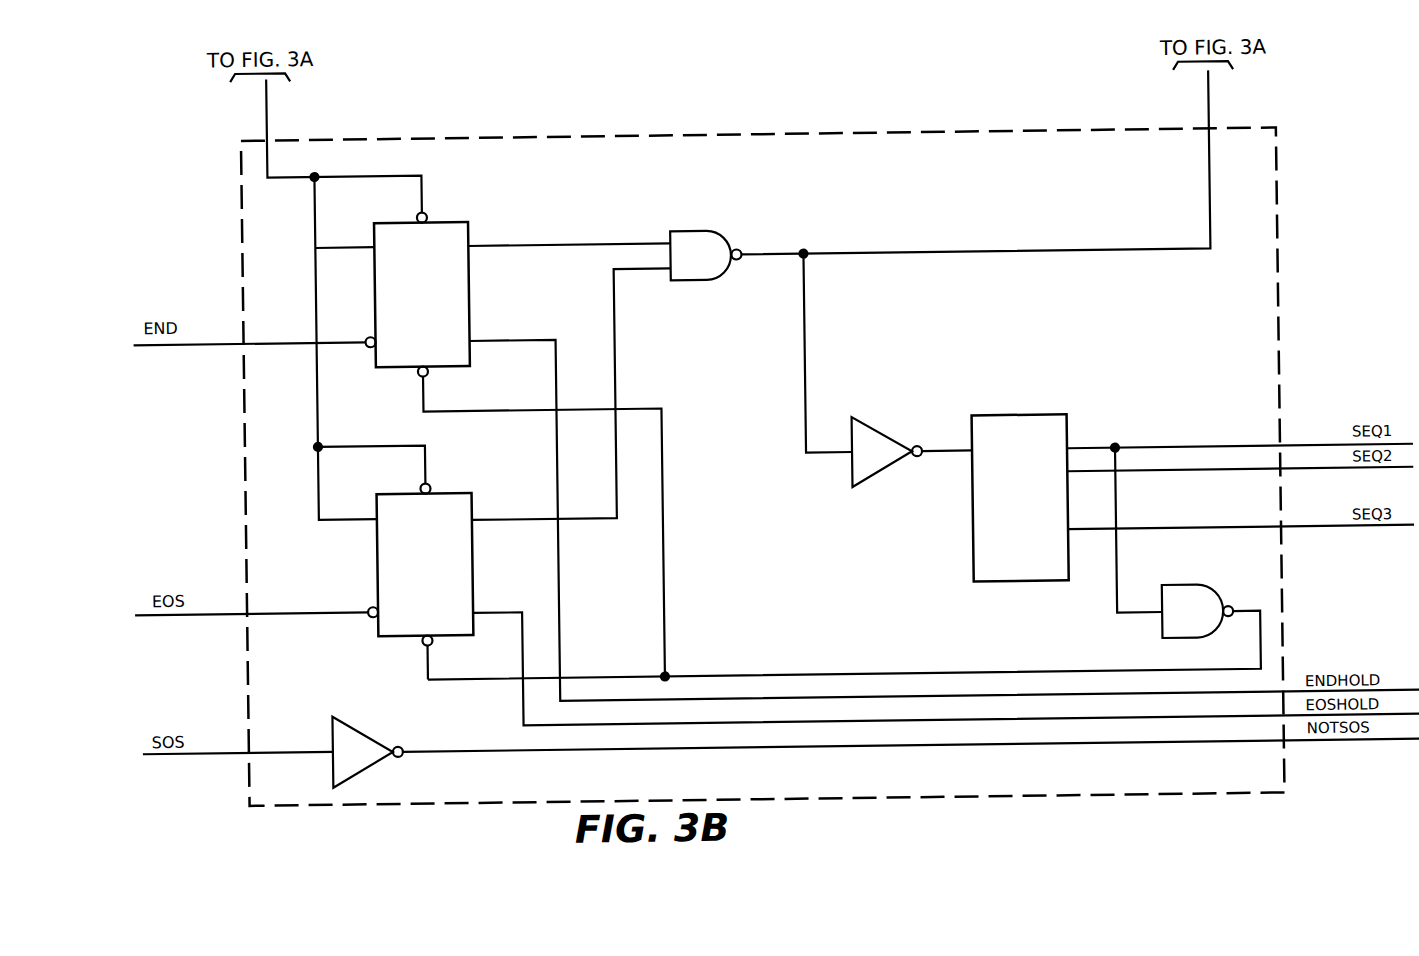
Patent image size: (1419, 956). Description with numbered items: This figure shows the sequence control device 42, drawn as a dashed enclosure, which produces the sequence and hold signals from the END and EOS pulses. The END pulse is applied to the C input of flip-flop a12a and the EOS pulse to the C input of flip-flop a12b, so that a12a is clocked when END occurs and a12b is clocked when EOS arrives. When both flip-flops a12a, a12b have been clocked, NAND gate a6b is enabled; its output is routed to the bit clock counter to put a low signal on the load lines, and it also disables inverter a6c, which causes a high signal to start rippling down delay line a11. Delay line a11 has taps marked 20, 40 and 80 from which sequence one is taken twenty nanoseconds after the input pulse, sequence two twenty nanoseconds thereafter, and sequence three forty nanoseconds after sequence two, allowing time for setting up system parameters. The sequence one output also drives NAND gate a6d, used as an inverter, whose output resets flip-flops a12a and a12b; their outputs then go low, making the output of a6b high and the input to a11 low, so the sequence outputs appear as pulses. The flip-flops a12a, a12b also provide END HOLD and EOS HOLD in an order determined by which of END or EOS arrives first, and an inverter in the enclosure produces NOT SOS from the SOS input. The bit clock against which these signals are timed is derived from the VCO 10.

The sequence control device 42 is at (1040, 801).
The VCO 10 is at (387, 470).
The 20 ns delay tap (SEQ1) 20 is at (1226, 450).
The 40 ns delay tap (SEQ2) 40 is at (1226, 471).
The 80 ns delay tap (SEQ3) 80 is at (1227, 529).
The flip-flop a12a is at (417, 294).
The flip-flop a12b is at (420, 569).
The NAND gate a6b is at (706, 255).
The inverter a6c is at (887, 451).
The NAND gate a6d is at (1198, 611).
The delay line a11 is at (1193, 496).